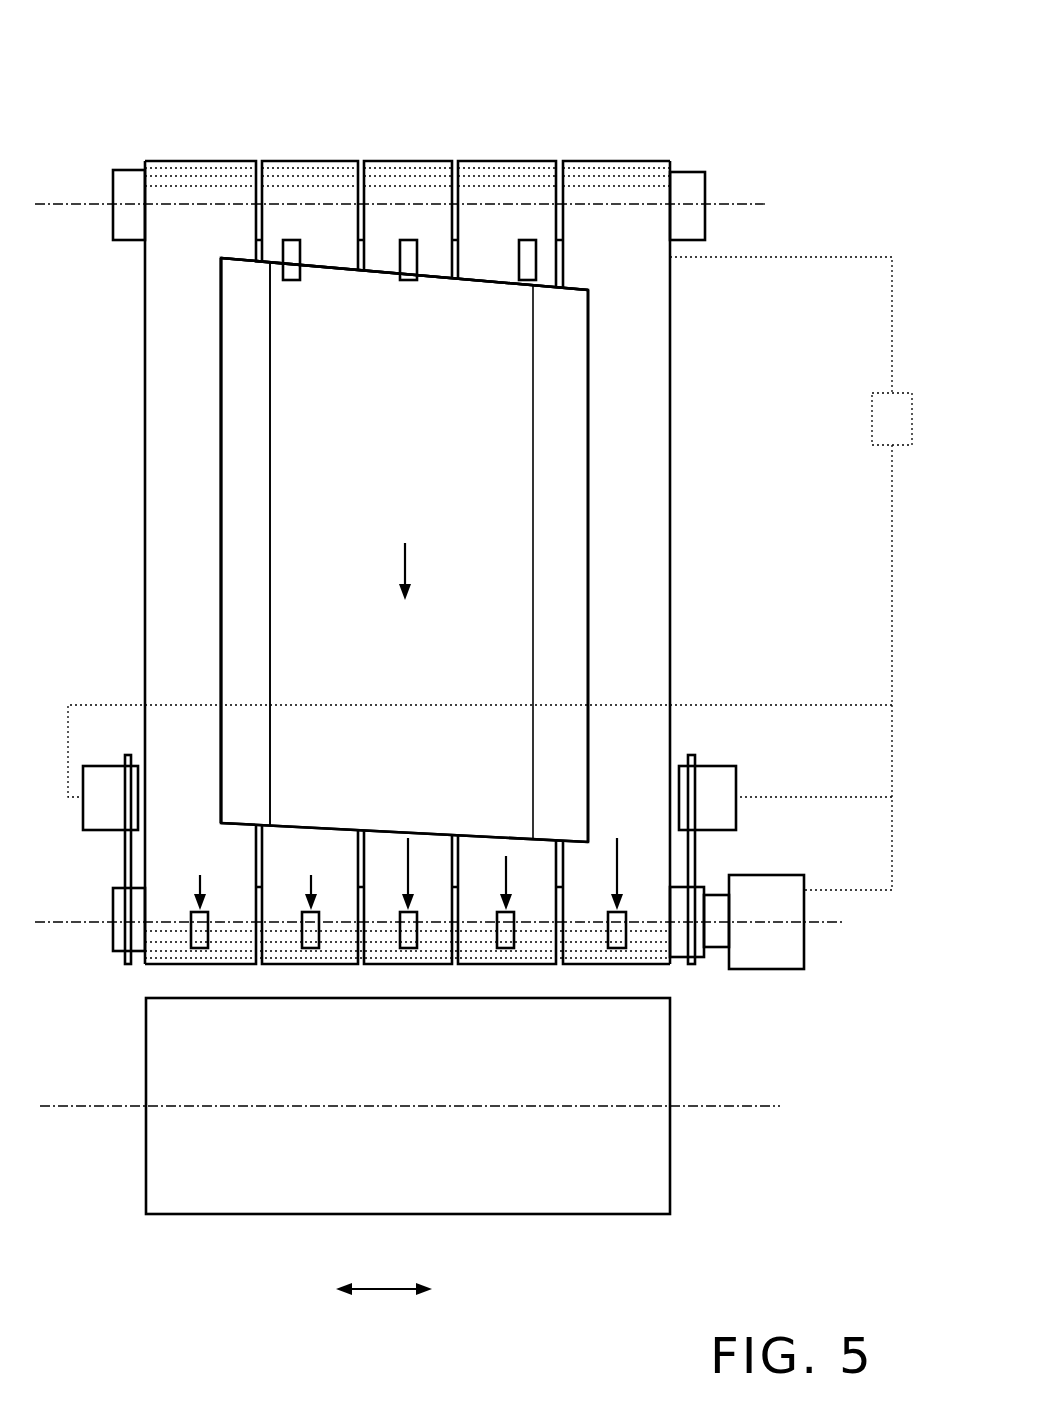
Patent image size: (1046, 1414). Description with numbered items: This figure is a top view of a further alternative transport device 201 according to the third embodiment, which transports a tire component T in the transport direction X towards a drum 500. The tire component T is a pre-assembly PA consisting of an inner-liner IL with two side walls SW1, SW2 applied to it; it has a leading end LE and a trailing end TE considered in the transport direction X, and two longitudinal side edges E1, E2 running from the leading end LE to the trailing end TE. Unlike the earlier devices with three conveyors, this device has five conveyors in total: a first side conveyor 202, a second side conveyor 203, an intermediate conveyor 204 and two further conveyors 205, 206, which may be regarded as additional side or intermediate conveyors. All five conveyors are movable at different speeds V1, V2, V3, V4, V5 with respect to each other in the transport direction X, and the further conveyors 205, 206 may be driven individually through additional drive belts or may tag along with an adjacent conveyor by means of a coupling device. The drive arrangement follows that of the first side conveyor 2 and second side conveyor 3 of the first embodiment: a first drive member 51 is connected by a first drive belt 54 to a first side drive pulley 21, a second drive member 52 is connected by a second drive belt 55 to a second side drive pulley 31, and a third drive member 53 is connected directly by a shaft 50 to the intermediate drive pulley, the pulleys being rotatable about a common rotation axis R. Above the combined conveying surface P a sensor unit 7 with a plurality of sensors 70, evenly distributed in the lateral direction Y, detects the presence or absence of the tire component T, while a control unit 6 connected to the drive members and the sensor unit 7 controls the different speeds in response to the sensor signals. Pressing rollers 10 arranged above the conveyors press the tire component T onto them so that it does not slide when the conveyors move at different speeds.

The transport device 201 is at (115, 79).
The first side conveyor 2 is at (163, 346).
The second side conveyor 3 is at (650, 386).
The sensor unit 7 is at (648, 197).
The combined conveying surface P is at (190, 215).
The sensor 70 is at (292, 250).
The tire component T is at (404, 550).
The trailing end TE is at (410, 282).
The inner-liner IL is at (404, 301).
The leading end LE is at (385, 830).
The longitudinal side edge E1 is at (221, 548).
The longitudinal side edge E2 is at (589, 526).
The side wall SW1 is at (255, 319).
The side wall SW2 is at (560, 348).
The pre-assembly PA is at (288, 458).
The transport direction X is at (414, 571).
The lateral direction Y is at (384, 1306).
The control unit 6 is at (490, 573).
The first drive member 51 is at (100, 838).
The first drive belt 54 is at (125, 862).
The first side drive pulley 21 is at (112, 955).
The second drive member 52 is at (725, 776).
The second drive belt 55 is at (692, 858).
The second side drive pulley 31 is at (690, 962).
The shaft 50 is at (717, 950).
The third drive member 53 is at (805, 942).
The pressing roller 10 is at (215, 942).
The common rotation axis R is at (427, 925).
The first side conveyor 202 is at (308, 952).
The second side conveyor 203 is at (503, 952).
The intermediate conveyor 204 is at (405, 952).
The further conveyor 205 is at (198, 952).
The further conveyor 206 is at (612, 952).
The speed V1 is at (327, 884).
The speed V2 is at (522, 883).
The speed V3 is at (424, 851).
The speed V4 is at (216, 884).
The speed V5 is at (633, 874).
The drum 500 is at (183, 1197).